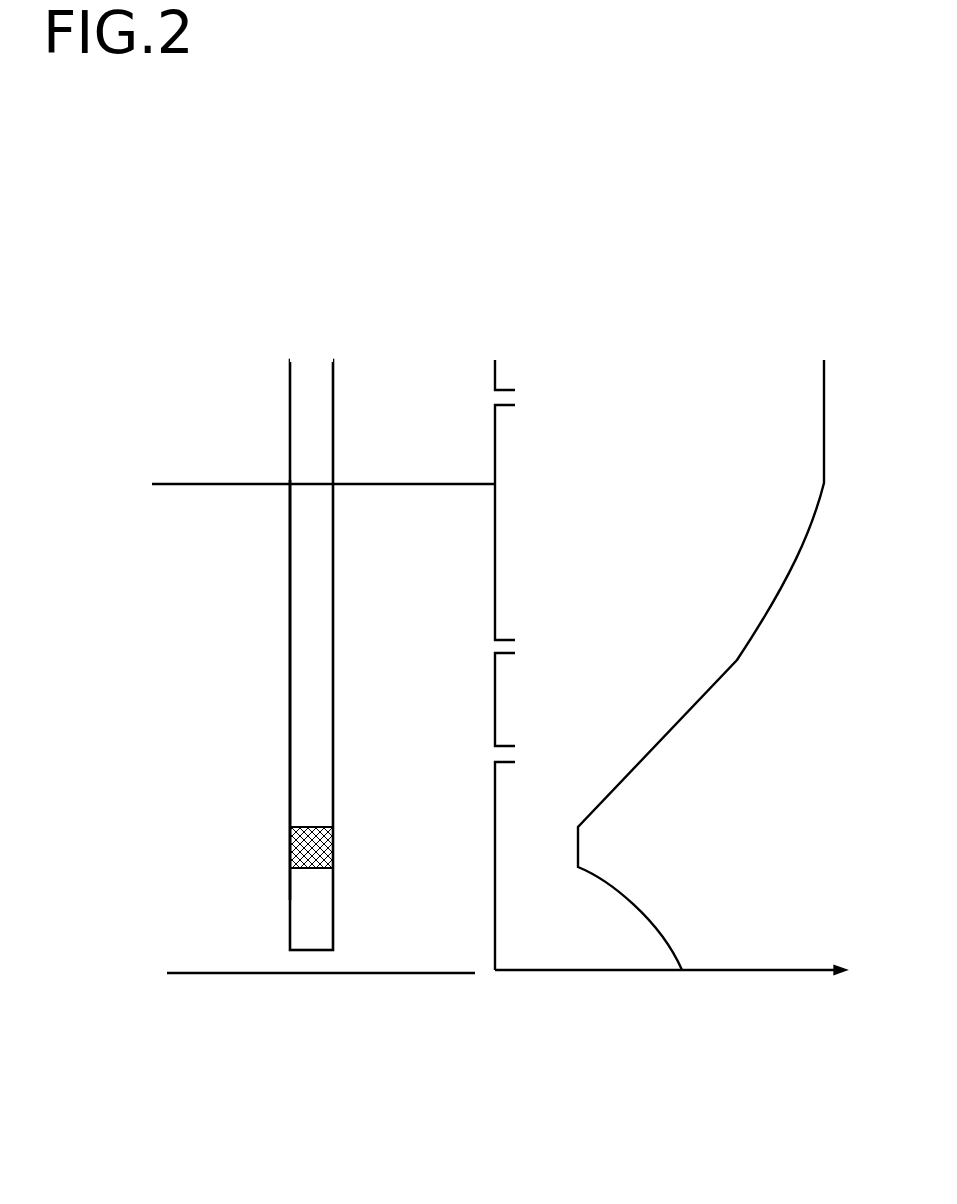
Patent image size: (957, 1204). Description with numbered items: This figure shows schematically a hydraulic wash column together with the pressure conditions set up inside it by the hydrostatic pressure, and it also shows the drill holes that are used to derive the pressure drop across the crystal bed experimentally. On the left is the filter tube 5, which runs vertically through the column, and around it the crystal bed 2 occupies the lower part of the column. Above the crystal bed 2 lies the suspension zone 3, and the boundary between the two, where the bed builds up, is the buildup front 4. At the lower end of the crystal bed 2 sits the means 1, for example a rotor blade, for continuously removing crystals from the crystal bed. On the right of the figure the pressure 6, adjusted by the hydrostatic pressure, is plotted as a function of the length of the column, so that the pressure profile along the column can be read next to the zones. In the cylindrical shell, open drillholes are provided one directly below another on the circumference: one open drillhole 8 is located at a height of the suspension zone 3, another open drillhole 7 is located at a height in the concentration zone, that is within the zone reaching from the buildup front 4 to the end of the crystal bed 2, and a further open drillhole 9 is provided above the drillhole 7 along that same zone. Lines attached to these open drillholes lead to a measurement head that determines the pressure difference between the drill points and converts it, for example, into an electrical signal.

The means for continuously removing crystals from the crystal bed 1 is at (400, 980).
The crystal bed 2 is at (385, 666).
The suspension zone 3 is at (400, 442).
The buildup front 4 is at (432, 492).
The filter tube 5 is at (280, 691).
The pressure within the hydraulic wash column as a function of its length 6 is at (684, 974).
The open drillhole 7 is at (516, 772).
The open drillhole 8 is at (516, 412).
The open drillhole 9 is at (516, 662).